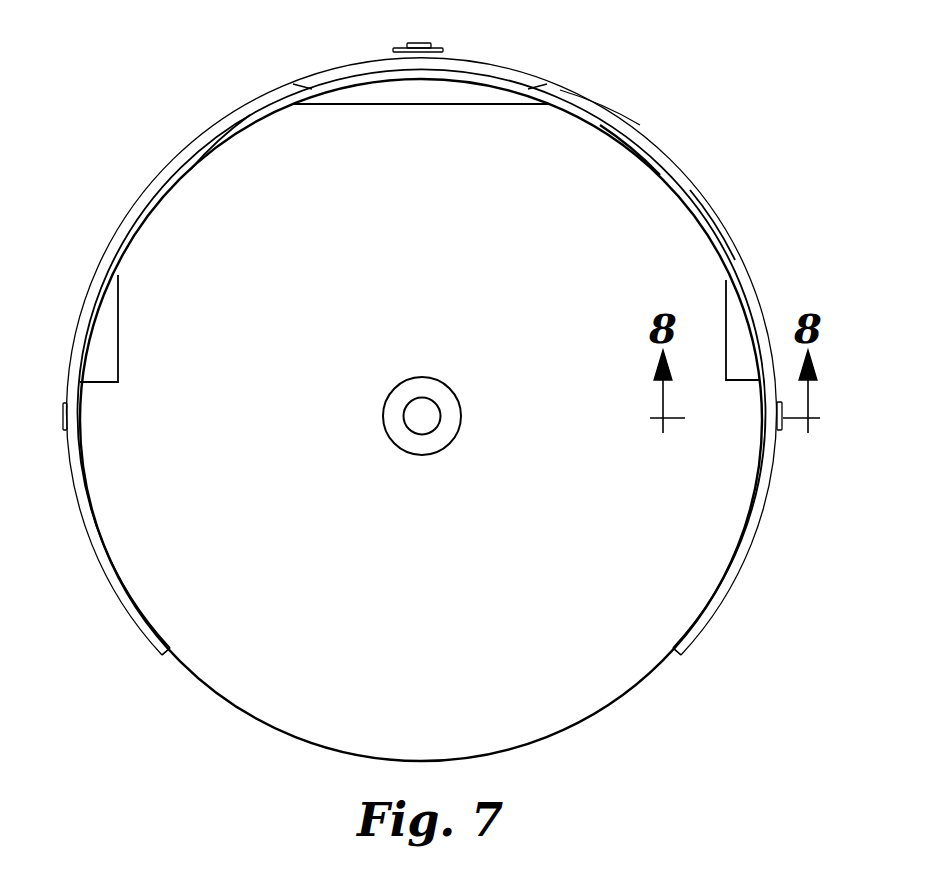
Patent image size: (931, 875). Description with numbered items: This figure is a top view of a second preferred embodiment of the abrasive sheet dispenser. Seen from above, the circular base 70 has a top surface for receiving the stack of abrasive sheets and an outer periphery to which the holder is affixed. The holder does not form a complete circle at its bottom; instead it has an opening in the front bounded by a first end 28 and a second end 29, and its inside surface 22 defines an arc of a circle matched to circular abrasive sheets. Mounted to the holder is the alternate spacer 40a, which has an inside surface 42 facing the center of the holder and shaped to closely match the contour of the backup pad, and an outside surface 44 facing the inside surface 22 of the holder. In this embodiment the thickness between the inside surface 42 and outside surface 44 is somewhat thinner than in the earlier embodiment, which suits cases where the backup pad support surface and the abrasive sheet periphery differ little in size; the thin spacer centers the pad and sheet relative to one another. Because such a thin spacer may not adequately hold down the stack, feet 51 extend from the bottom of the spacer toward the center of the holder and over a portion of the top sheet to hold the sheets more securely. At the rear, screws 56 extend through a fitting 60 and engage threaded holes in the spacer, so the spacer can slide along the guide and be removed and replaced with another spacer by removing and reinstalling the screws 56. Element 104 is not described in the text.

The inside surface 22 is at (731, 560).
The first end 28 is at (677, 652).
The second end 29 is at (167, 660).
The spacer 40a is at (625, 164).
The inside surface 42 is at (703, 243).
The outside surface 44 is at (598, 118).
The feet 51 is at (420, 105).
The screws 56 is at (440, 50).
The fitting 60 is at (403, 46).
The base 70 is at (566, 752).
The guard liner 104 is at (220, 150).